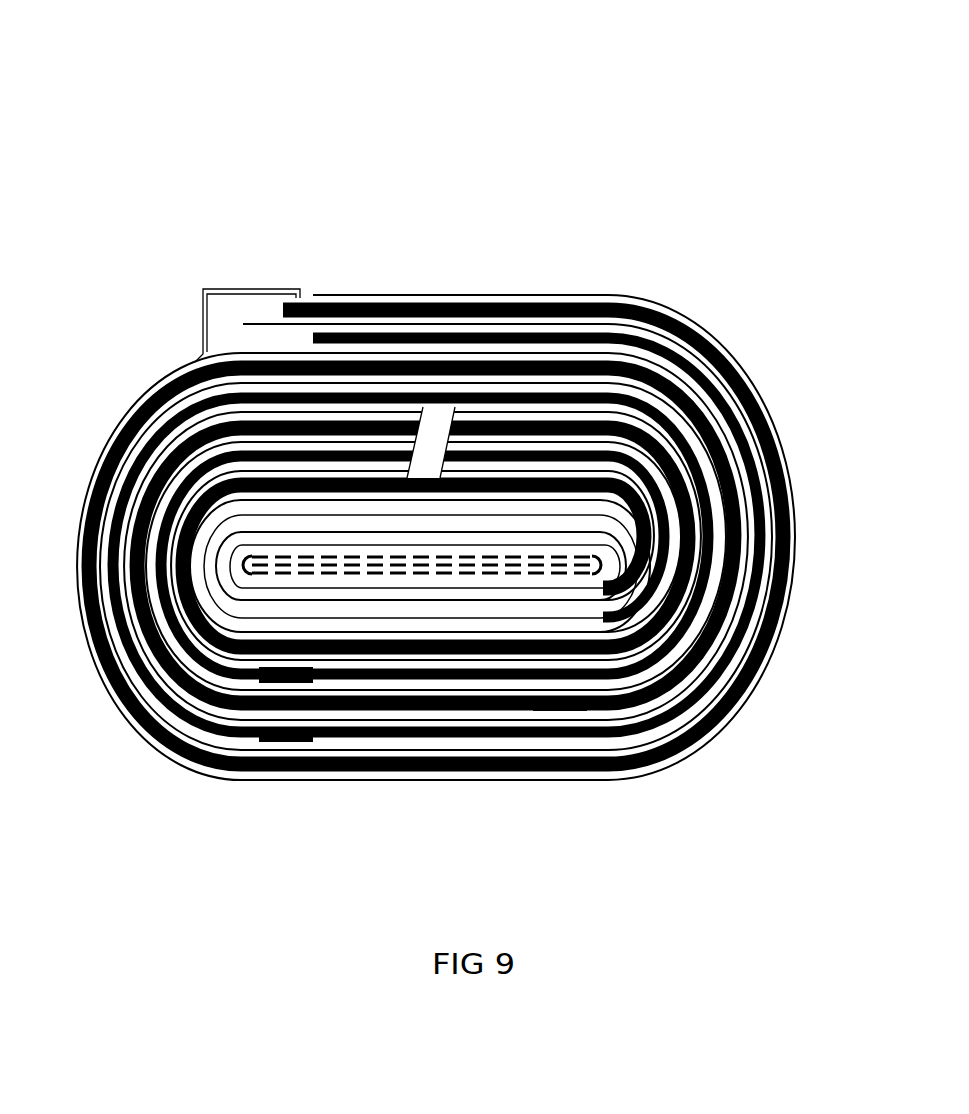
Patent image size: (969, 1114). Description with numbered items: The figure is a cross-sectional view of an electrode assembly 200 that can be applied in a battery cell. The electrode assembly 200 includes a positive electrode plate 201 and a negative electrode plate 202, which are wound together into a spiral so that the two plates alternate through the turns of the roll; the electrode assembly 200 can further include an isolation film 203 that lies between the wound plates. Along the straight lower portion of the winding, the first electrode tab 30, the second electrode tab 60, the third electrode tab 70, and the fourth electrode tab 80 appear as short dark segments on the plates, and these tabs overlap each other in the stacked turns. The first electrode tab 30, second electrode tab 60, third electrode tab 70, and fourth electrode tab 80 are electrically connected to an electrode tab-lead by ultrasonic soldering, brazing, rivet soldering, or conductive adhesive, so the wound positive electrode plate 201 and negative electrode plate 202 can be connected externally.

The electrode assembly 200 is at (127, 92).
The positive electrode plate 201 is at (755, 405).
The negative electrode plate 202 is at (747, 480).
The isolation film 203 is at (790, 520).
The first electrode tab 30 is at (288, 742).
The second electrode tab 60 is at (270, 770).
The third electrode tab 70 is at (312, 687).
The fourth electrode tab 80 is at (449, 765).